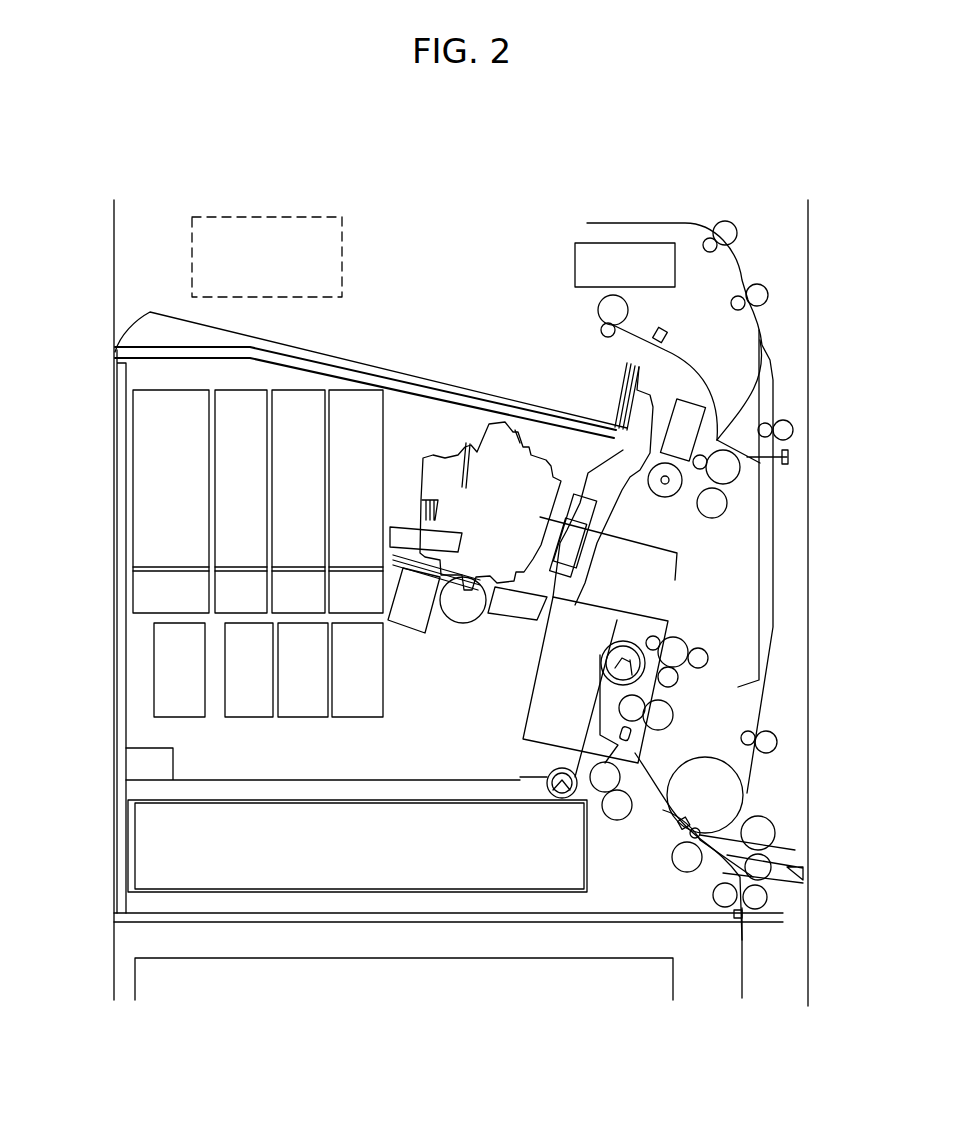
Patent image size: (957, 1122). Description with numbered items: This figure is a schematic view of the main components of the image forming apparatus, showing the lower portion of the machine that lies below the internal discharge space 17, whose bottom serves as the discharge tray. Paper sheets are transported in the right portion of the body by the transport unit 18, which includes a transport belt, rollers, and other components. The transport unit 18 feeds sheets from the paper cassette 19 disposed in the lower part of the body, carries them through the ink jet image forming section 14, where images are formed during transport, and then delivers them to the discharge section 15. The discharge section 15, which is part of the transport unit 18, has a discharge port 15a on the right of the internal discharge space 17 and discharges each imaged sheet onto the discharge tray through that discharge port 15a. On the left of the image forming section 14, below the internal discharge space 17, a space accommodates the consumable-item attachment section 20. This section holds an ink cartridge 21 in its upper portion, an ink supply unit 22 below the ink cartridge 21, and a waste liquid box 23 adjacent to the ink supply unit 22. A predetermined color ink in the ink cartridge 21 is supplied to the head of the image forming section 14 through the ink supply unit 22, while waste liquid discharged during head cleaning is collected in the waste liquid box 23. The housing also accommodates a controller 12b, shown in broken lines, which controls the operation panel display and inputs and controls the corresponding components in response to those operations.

The controller 12b is at (248, 215).
The image forming section 14 is at (563, 400).
The discharge section 15 is at (816, 332).
The discharge port 15a is at (590, 312).
The internal discharge space 17 is at (396, 305).
The transport unit 18 is at (874, 357).
The paper cassette 19 is at (135, 987).
The consumable-item attachment section 20 is at (295, 641).
The ink cartridge 21 is at (106, 403).
The ink supply unit 22 is at (106, 630).
The waste liquid box 23 is at (321, 816).